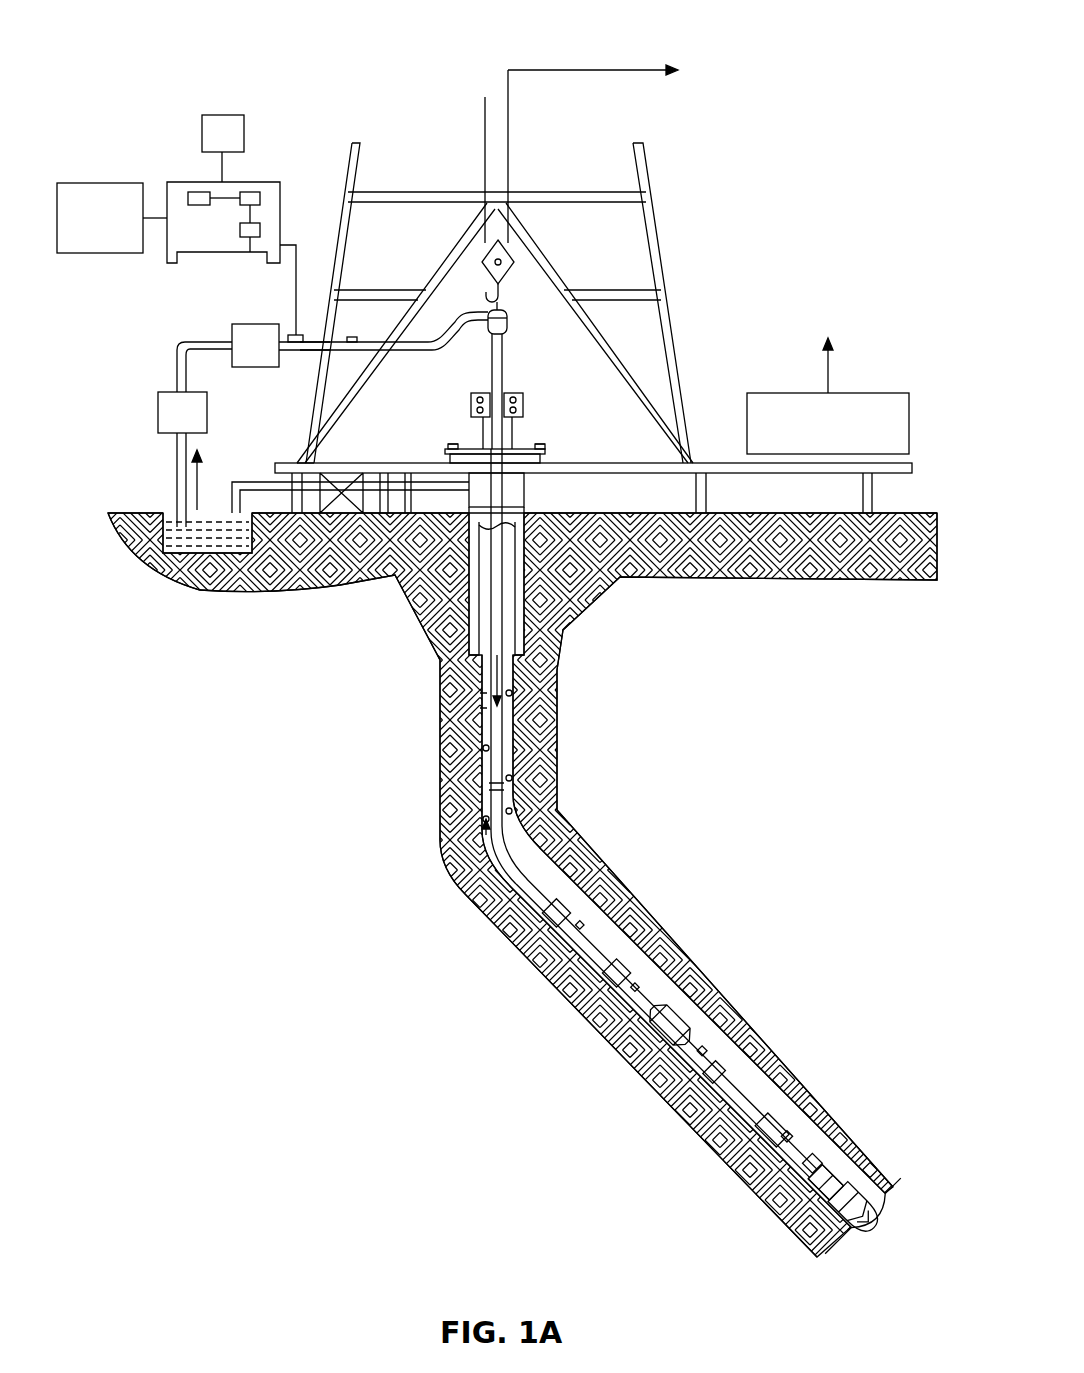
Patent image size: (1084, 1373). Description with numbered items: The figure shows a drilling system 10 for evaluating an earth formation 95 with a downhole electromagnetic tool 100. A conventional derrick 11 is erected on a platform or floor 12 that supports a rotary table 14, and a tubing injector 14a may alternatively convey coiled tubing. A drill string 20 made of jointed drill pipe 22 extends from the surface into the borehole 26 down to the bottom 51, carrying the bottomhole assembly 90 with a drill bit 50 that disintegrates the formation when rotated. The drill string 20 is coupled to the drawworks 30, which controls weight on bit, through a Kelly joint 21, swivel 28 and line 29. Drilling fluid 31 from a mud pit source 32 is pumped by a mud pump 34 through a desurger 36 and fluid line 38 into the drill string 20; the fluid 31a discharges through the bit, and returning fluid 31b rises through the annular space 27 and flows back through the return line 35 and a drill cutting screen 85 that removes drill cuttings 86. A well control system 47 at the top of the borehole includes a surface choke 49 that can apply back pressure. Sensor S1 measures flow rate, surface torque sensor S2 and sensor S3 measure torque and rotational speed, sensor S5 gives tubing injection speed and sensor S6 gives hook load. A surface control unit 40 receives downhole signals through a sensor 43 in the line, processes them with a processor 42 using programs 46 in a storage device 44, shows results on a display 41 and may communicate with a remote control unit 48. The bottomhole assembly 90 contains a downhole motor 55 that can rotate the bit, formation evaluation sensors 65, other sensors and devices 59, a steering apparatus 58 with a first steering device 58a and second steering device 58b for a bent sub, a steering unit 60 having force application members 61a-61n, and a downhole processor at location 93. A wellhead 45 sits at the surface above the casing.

The drilling system 10 is at (146, 30).
The derrick 11 is at (665, 303).
The platform or floor 12 is at (690, 455).
The rotary table 14 is at (525, 449).
The tubing injector 14a is at (523, 407).
The drill string 20 is at (514, 750).
The Kelly joint 21 is at (505, 380).
The jointed drill pipe 22 is at (482, 735).
The borehole 26 is at (515, 823).
The annular space 27 is at (560, 866).
The swivel 28 is at (486, 325).
The line 29 is at (508, 170).
The drawworks 30 is at (858, 393).
The drilling fluid 31 is at (175, 525).
The drilling fluid from the drilling tubular 31a is at (488, 672).
The returning drilling fluid 31b is at (483, 851).
The source of drilling fluid 32 is at (188, 548).
The mud pump 34 is at (158, 412).
The return line 35 is at (408, 492).
The desurger 36 is at (232, 340).
The fluid line 38 is at (315, 351).
The surface control unit 40 is at (205, 182).
The display/monitor 41 is at (222, 115).
The processor 42 is at (197, 192).
The sensor 43 is at (291, 335).
The storage device 44 is at (250, 192).
The wellhead 45 is at (527, 507).
The computer programs 46 is at (250, 238).
The well control system 47 is at (450, 401).
The remote control unit 48 is at (123, 183).
The surface choke 49 is at (530, 512).
The drill bit 50 is at (882, 1208).
The bottom of the borehole 51 is at (823, 1253).
The downhole motor 55 is at (598, 935).
The steering apparatus 58 is at (830, 1133).
The first steering device 58a is at (813, 1240).
The second steering device 58b is at (820, 1187).
The sensors and devices 59 is at (867, 1158).
The steering unit 60 is at (790, 1180).
The force application members 61a-61n is at (813, 1140).
The formation evaluation sensors 65 is at (703, 1103).
The drill cutting screen 85 is at (333, 462).
The drill cuttings 86 is at (512, 693).
The bottomhole assembly 90 is at (737, 918).
The downhole processor location 93 is at (650, 1048).
The earth formation 95 is at (848, 989).
The tool 100 is at (777, 1067).
The sensor S1 is at (352, 335).
The surface torque sensor S2 is at (548, 449).
The sensor S3 is at (452, 450).
The sensor S5 is at (507, 342).
The sensor S6 is at (503, 305).